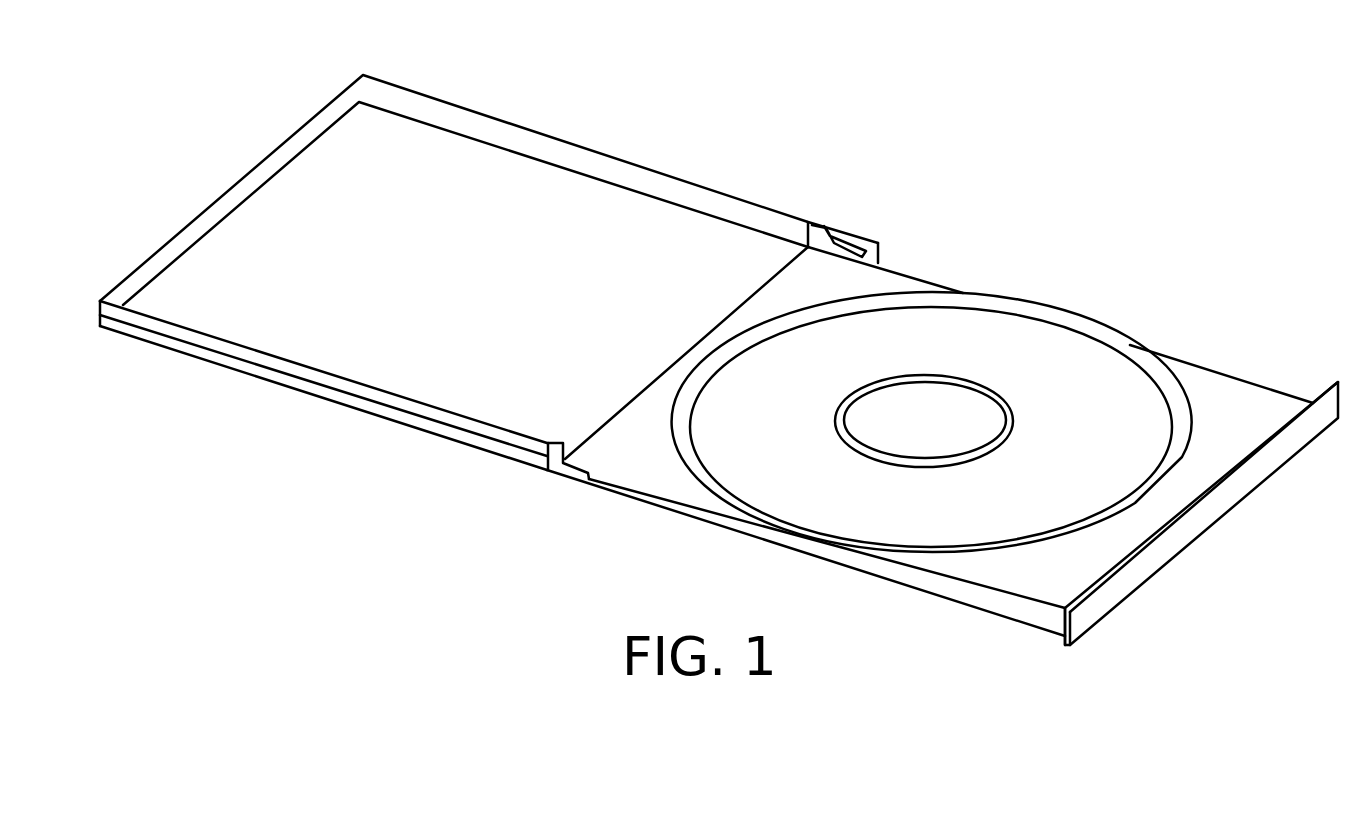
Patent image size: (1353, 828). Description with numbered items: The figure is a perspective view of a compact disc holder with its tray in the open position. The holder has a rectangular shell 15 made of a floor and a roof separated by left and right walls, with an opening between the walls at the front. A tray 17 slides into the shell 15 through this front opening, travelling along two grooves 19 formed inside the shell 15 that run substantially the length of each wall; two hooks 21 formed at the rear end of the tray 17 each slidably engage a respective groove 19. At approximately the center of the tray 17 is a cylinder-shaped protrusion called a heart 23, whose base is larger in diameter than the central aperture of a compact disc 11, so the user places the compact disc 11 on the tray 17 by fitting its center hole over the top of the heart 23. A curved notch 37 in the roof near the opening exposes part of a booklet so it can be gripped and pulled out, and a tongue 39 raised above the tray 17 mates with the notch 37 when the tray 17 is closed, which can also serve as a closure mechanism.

The compact disc 11 is at (933, 317).
The rectangular shell 15 is at (427, 132).
The tray 17 is at (978, 597).
The groove 19 is at (285, 378).
The hook 21 is at (563, 470).
The heart 23 is at (965, 377).
The curved notch 37 is at (736, 308).
The tongue 39 is at (1165, 490).